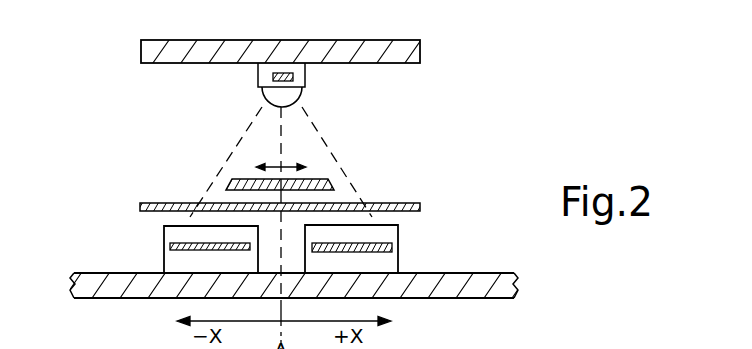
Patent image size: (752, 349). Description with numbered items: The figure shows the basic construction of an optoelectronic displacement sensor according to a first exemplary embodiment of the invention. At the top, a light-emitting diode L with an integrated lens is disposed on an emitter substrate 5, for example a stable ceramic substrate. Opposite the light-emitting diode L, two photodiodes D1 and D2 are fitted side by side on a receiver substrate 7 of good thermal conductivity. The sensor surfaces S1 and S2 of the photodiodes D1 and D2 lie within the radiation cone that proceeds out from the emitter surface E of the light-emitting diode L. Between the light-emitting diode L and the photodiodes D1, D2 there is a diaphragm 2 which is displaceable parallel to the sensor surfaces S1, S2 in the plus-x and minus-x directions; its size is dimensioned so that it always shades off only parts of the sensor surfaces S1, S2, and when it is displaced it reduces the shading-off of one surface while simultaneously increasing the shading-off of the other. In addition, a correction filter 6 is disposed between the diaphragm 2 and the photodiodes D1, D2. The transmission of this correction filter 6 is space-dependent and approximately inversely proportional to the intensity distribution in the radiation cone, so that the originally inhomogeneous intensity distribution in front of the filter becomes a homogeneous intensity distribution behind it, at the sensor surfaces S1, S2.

The emitter substrate 5 is at (400, 57).
The emitter surface E is at (275, 79).
The light-emitting diode L is at (306, 83).
The diaphragm 2 is at (327, 184).
The correction filter 6 is at (157, 204).
The sensor surface S1 is at (172, 246).
The photodiode D1 is at (178, 262).
The sensor surface S2 is at (395, 243).
The photodiode D2 is at (382, 264).
The receiver substrate 7 is at (103, 286).